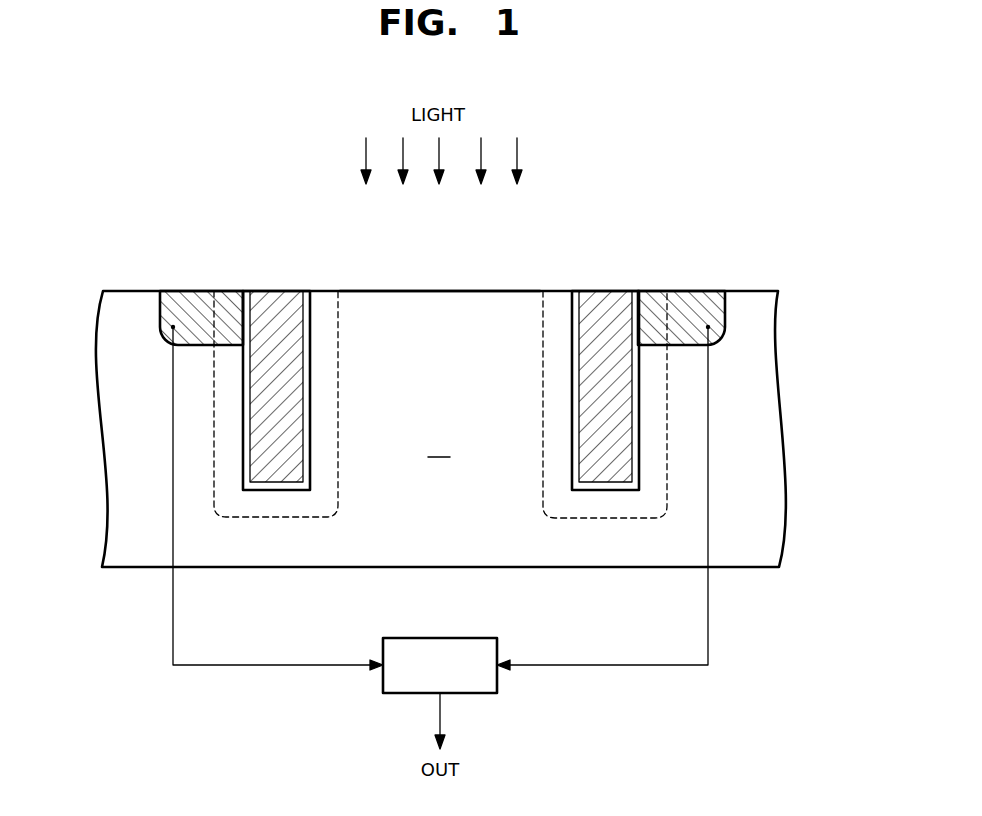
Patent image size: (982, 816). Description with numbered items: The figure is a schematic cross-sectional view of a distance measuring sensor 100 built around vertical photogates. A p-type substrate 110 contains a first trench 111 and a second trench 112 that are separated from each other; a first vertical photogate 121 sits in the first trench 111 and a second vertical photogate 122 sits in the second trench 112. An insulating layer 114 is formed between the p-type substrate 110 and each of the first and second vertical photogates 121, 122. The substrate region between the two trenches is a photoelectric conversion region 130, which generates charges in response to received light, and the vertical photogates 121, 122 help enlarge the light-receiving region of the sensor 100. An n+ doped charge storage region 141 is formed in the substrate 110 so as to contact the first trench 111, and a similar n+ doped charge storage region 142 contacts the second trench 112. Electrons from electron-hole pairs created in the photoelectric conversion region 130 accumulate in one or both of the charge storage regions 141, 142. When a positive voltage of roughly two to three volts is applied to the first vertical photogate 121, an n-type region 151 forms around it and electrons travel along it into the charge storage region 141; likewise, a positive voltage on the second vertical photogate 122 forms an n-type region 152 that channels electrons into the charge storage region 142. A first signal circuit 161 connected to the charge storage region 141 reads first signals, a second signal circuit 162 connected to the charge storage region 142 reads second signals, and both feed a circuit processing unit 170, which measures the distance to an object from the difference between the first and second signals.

The distance measuring sensor 100 is at (108, 224).
The p-type substrate 110 is at (777, 432).
The first trench 111 is at (296, 300).
The second trench 112 is at (579, 303).
The insulating layer 114 is at (244, 290).
The first vertical photogate 121 is at (278, 290).
The second vertical photogate 122 is at (605, 290).
The photoelectric conversion region 130 is at (444, 278).
The charge storage region 141 is at (187, 290).
The charge storage region 142 is at (710, 290).
The n-type region 151 is at (330, 305).
The n-type region 152 is at (551, 313).
The first signal circuit 161 is at (278, 670).
The second signal circuit 162 is at (602, 670).
The circuit processing unit 170 is at (440, 665).